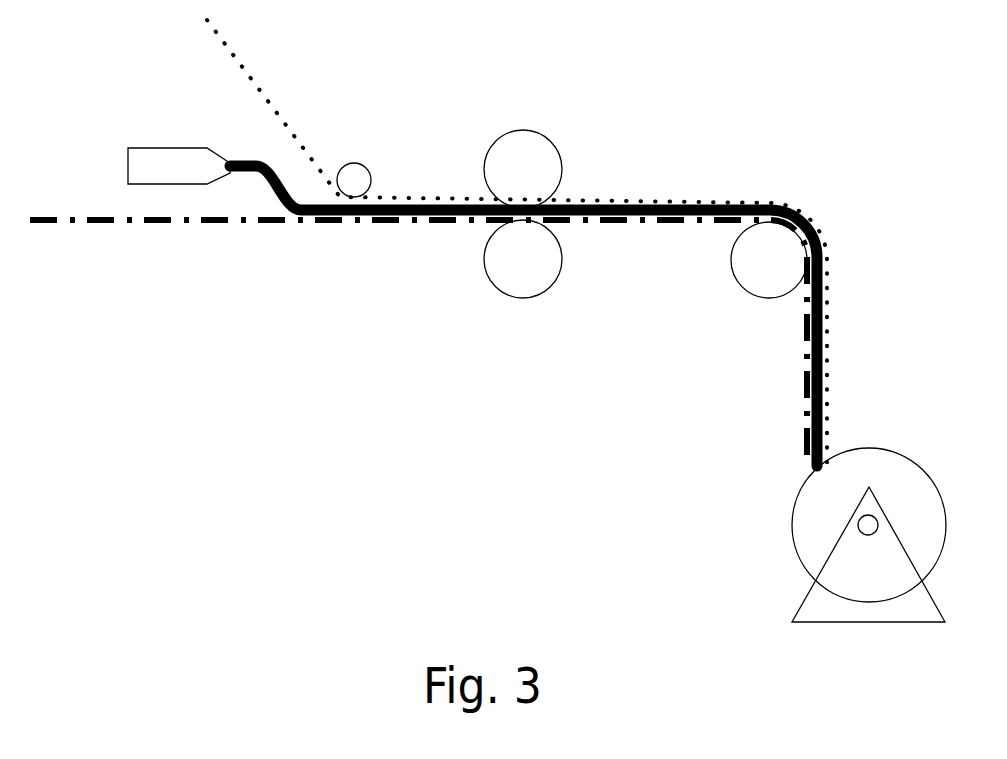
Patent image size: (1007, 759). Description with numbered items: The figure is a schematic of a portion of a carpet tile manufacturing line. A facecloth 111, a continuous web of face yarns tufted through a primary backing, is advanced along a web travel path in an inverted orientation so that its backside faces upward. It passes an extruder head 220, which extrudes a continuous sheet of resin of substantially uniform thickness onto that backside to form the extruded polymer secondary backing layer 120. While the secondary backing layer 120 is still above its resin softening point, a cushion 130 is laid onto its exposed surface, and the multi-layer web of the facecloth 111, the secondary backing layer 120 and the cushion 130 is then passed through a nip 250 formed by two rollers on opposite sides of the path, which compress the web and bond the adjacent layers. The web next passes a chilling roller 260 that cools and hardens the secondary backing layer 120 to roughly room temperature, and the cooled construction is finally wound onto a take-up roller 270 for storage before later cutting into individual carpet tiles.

The facecloth 111 is at (100, 223).
The extruded polymer secondary backing layer 120 is at (263, 165).
The cushion 130 is at (243, 65).
The extruder head 220 is at (185, 148).
The nip 250 is at (490, 314).
The chilling roller 260 is at (743, 287).
The take-up roller 270 is at (792, 520).